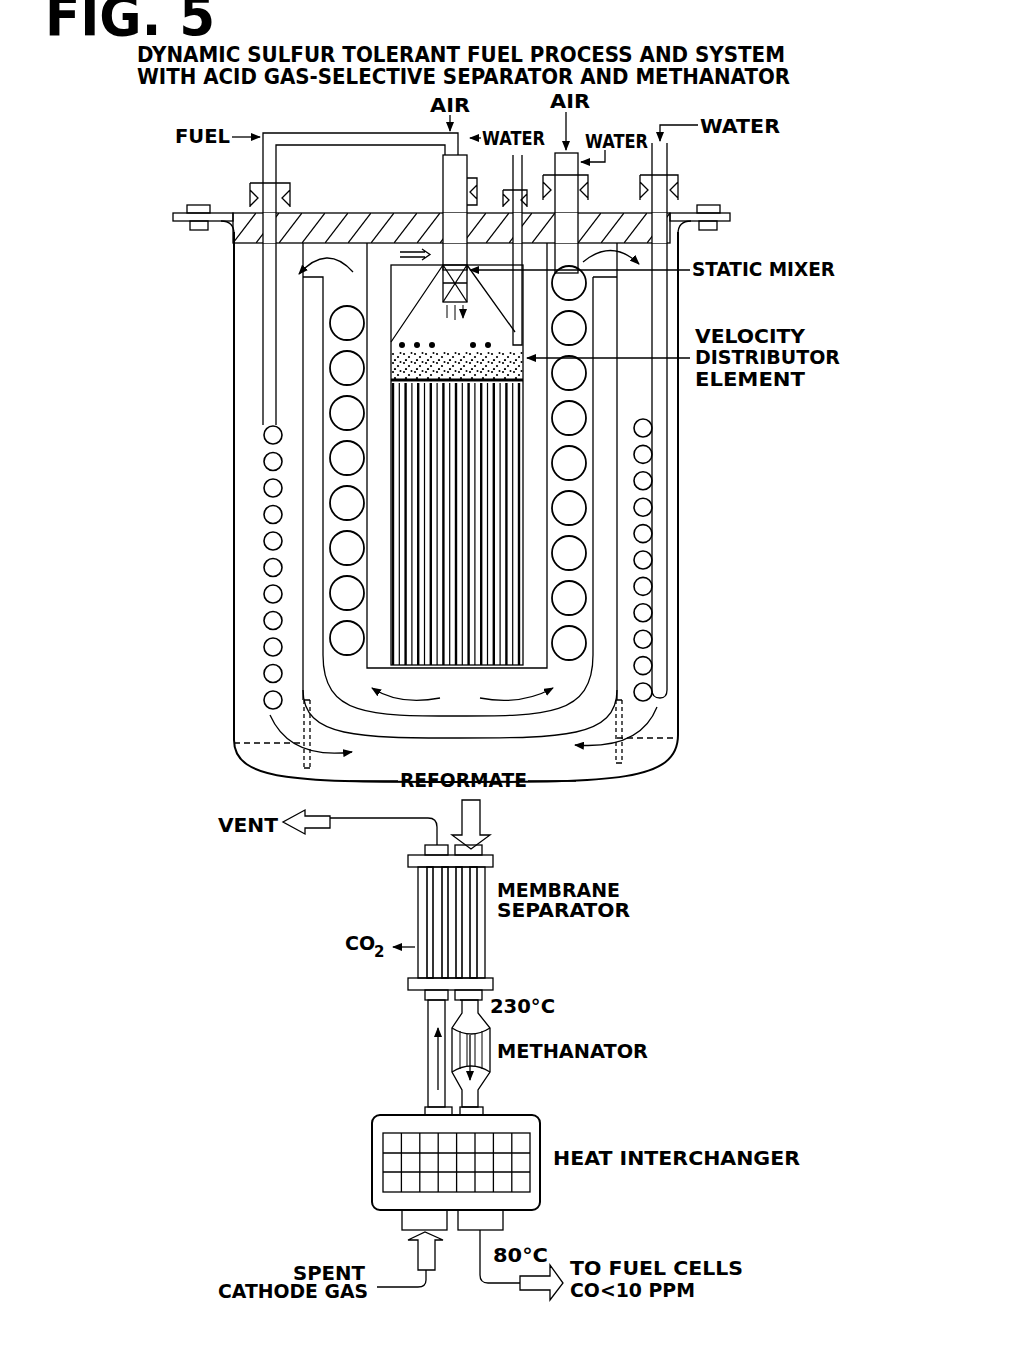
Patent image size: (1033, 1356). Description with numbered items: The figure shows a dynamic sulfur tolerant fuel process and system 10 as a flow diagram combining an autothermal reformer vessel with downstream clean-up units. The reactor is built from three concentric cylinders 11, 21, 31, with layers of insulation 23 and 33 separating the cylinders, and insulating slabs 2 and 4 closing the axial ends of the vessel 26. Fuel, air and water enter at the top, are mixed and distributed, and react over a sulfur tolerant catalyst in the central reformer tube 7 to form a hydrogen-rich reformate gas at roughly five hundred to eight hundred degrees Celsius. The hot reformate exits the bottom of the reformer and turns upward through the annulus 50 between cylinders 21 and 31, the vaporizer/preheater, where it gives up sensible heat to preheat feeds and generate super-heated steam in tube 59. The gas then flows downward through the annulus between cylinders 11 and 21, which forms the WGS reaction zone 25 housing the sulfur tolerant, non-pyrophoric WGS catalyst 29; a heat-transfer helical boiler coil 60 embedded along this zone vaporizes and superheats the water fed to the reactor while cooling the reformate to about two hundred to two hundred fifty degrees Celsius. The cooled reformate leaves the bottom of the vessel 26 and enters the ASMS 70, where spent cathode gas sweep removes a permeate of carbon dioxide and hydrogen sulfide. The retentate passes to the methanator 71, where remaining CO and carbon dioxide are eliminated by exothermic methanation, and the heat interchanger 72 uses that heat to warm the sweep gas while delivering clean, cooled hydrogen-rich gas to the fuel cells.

The dynamic sulfur tolerant fuel process and system 10 is at (157, 186).
The concentric cylinder 11 is at (230, 293).
The insulating slab 2 is at (404, 228).
The concentric cylinder 31 is at (386, 267).
The layer of insulation 33 is at (382, 288).
The reformer tube bundle 7 is at (461, 455).
The concentric cylinder 21 is at (318, 470).
The layer of insulation 23 is at (318, 491).
The WGS catalyst 29 is at (253, 560).
The WGS reaction zone 25 is at (255, 612).
The annulus 50 is at (565, 487).
The heat-transfer helical boiler coil 60 is at (648, 482).
The tube 59 is at (574, 510).
The insulating slab 4 is at (419, 733).
The vessel 26 is at (627, 762).
The ASMS 70 is at (470, 922).
The methanator 71 is at (489, 1053).
The heat interchanger 72 is at (477, 1172).